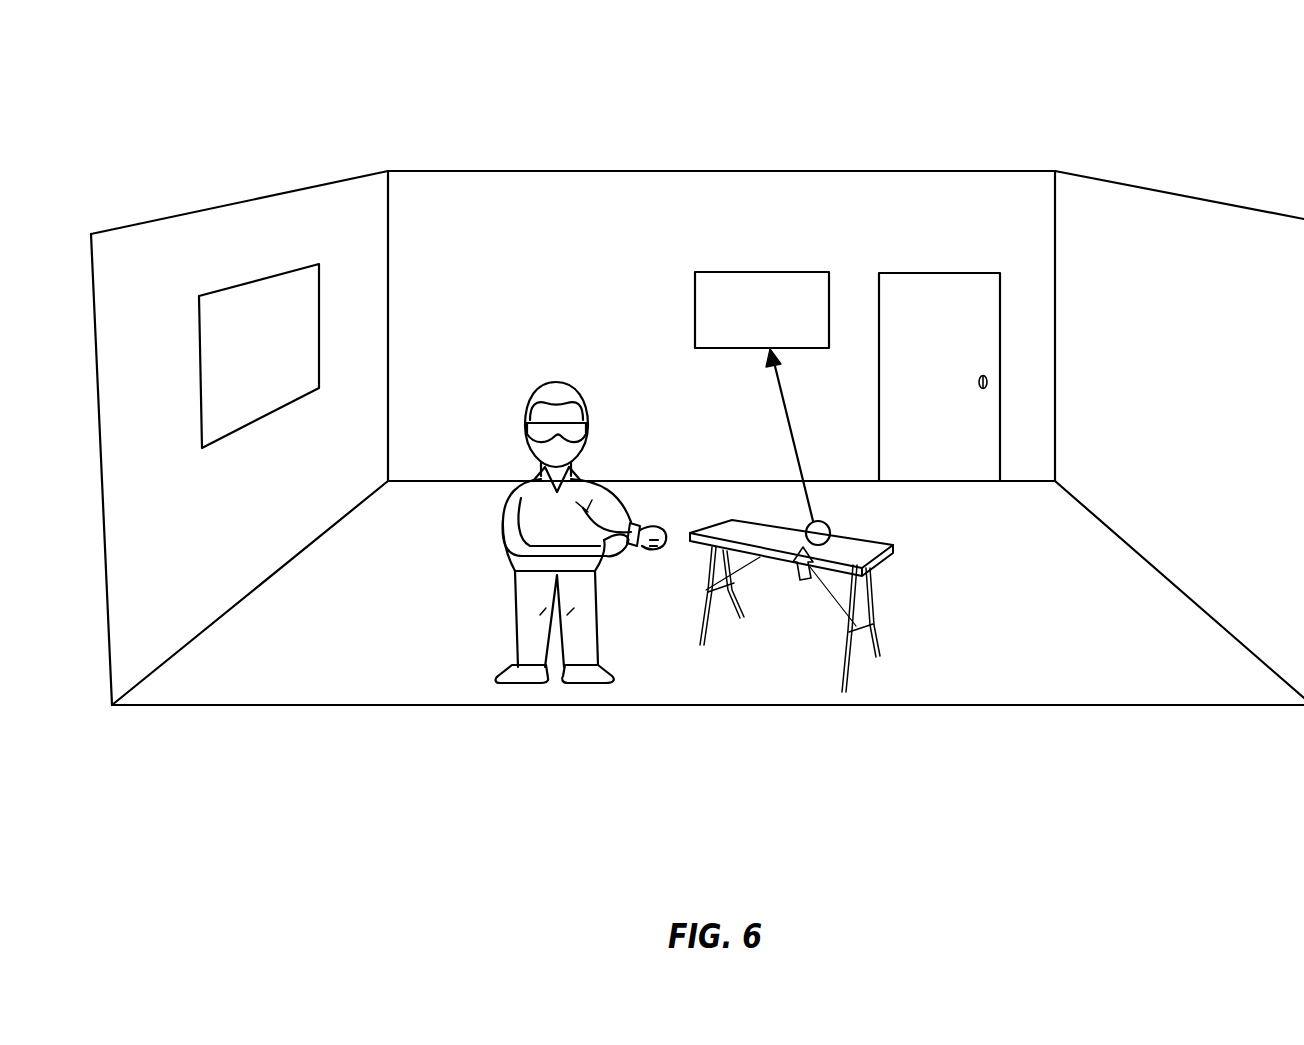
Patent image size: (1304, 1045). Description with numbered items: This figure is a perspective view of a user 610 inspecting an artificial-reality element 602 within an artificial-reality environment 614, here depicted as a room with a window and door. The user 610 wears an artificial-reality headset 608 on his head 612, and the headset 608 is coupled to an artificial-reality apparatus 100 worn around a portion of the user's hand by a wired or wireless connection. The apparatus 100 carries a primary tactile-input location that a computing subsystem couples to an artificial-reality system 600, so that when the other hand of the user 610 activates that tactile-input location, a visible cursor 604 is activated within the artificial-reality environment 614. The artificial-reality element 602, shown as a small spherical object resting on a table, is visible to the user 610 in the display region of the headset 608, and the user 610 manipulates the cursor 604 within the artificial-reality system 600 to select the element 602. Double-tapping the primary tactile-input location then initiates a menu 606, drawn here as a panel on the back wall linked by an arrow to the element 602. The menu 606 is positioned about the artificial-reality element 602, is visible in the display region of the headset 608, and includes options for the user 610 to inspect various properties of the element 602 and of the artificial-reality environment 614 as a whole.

The artificial-reality system 600 is at (128, 136).
The artificial-reality apparatus 100 is at (634, 525).
The artificial-reality element 602 is at (832, 532).
The cursor 604 is at (803, 579).
The menu 606 is at (745, 331).
The artificial-reality headset 608 is at (527, 428).
The user 610 is at (541, 492).
The head 612 is at (558, 379).
The artificial-reality environment 614 is at (112, 729).